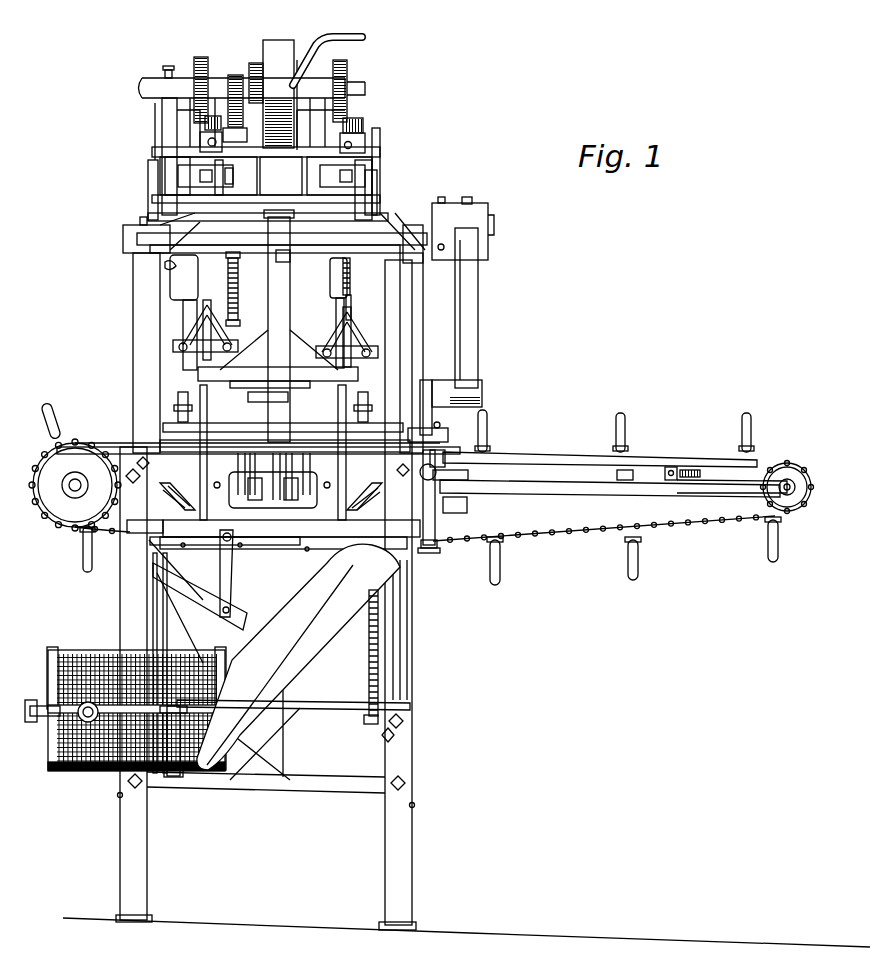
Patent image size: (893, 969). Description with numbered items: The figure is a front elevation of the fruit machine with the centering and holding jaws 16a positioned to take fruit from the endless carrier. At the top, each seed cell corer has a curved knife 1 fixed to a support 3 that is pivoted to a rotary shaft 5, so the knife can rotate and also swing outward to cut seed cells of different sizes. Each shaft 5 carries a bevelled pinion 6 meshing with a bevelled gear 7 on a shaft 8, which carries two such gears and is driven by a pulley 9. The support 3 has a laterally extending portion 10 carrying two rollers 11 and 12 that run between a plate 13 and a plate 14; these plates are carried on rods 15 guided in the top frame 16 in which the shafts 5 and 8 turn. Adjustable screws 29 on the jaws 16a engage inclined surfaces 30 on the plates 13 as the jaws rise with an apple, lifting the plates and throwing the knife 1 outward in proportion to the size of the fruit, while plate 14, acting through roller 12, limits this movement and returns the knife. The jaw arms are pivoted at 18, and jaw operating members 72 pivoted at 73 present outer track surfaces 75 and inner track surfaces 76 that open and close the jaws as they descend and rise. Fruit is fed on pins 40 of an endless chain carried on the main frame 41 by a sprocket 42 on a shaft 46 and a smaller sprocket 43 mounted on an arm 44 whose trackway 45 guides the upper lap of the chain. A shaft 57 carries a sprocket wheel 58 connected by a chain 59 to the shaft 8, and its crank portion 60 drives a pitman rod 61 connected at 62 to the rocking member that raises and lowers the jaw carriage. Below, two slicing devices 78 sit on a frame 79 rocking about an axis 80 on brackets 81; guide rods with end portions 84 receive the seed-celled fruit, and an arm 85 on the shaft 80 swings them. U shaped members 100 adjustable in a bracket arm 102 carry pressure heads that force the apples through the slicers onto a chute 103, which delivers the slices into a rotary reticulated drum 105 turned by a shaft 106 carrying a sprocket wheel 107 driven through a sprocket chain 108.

The curved knife 1 is at (172, 290).
The support 3 is at (168, 264).
The rotary shaft 5 is at (200, 175).
The bevelled pinion 6 is at (205, 128).
The bevelled gear 7 is at (200, 62).
The shaft 8 is at (234, 76).
The pulley 9 is at (276, 48).
The laterally extending portion 10 is at (135, 240).
The roller 11 is at (152, 252).
The roller 12 is at (349, 265).
The plate 13 is at (215, 190).
The plate 14 is at (152, 215).
The rods 15 is at (378, 181).
The top frame 16 is at (185, 160).
The cup shaped jaws 16a is at (178, 400).
The pivot 18 is at (200, 372).
The adjustable screws 29 is at (428, 396).
The inclined surfaces 30 is at (239, 266).
The pins 40 is at (86, 562).
The main frame 41 is at (398, 824).
The sprocket 42 is at (84, 548).
The smaller sprocket 43 is at (790, 468).
The arm 44 is at (551, 488).
The trackway 45 is at (523, 450).
The shaft 46 is at (68, 500).
The shaft 57 is at (288, 258).
The sprocket wheel 58 is at (239, 282).
The chain 59 is at (239, 300).
The crank portion 60 is at (448, 212).
The pitman rod 61 is at (470, 322).
The connection 62 is at (482, 394).
The jaw operating members 72 is at (195, 327).
The pivot 73 is at (168, 437).
The outer track surfaces 75 is at (428, 432).
The inner track surfaces 76 is at (233, 570).
The slicing devices 78 is at (318, 552).
The frame 79 is at (283, 548).
The axis 80 is at (428, 540).
The brackets 81 is at (152, 585).
The end portion 84 is at (180, 346).
The arm 85 is at (436, 510).
The U shaped members 100 is at (185, 447).
The bracket arm 102 is at (265, 397).
The chute 103 is at (298, 657).
The rotary reticulated drum 105 is at (88, 652).
The shaft 106 is at (345, 712).
The sprocket wheel 107 is at (372, 724).
The sprocket chain 108 is at (369, 672).